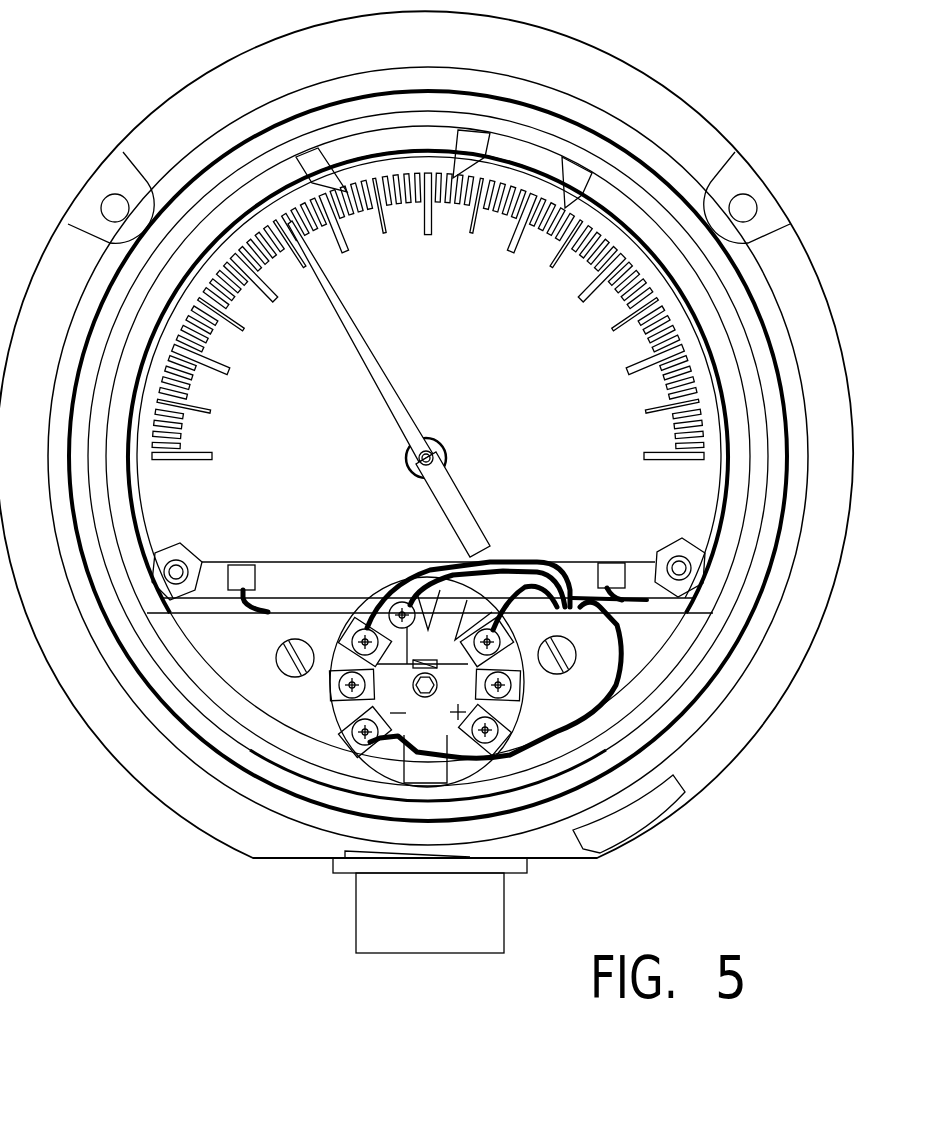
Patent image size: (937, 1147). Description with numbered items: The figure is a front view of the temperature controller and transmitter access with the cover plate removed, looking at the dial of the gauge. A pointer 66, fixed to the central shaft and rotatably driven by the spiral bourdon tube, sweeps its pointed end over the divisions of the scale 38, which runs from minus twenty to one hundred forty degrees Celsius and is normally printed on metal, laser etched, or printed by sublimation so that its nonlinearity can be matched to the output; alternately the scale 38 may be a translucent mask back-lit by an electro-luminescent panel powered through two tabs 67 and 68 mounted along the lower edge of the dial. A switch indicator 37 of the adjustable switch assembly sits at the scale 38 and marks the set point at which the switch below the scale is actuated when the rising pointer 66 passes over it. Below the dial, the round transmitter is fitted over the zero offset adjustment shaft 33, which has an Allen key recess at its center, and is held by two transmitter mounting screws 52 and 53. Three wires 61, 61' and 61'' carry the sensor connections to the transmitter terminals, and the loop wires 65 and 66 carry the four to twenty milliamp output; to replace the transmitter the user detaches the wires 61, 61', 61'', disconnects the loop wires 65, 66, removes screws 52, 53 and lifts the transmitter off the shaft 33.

The zero offset adjustment shaft 33 is at (413, 690).
The switch indicator 37 is at (347, 192).
The scale 38 is at (395, 243).
The transmitter mounting screw 52 is at (515, 681).
The transmitter mounting screw 53 is at (335, 688).
The wire 61 is at (453, 567).
The wire 61' is at (475, 554).
The wire 61'' is at (524, 566).
The loop wire 65 is at (520, 717).
The pointer 66 is at (387, 392).
The tab 67 is at (237, 582).
The tab 68 is at (612, 580).